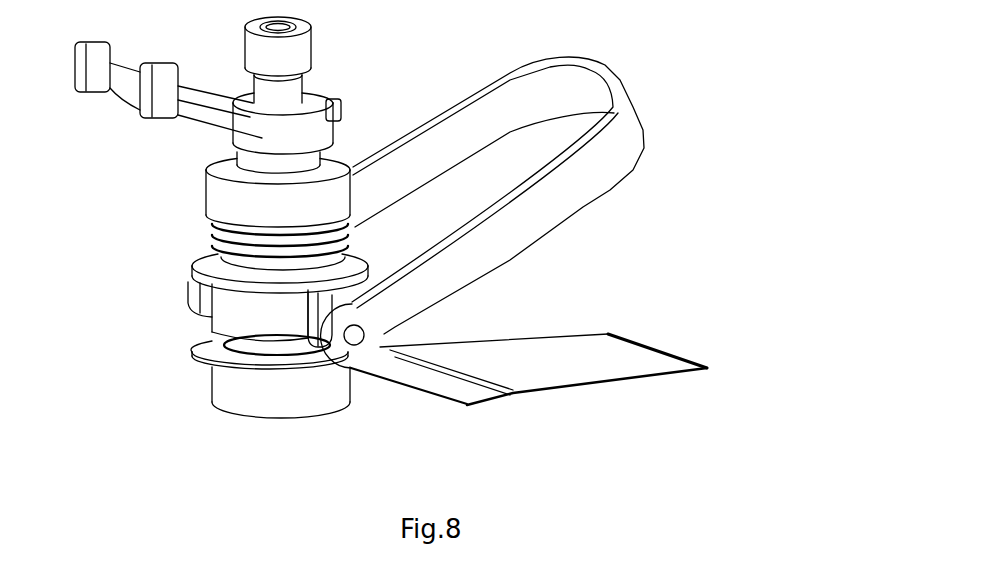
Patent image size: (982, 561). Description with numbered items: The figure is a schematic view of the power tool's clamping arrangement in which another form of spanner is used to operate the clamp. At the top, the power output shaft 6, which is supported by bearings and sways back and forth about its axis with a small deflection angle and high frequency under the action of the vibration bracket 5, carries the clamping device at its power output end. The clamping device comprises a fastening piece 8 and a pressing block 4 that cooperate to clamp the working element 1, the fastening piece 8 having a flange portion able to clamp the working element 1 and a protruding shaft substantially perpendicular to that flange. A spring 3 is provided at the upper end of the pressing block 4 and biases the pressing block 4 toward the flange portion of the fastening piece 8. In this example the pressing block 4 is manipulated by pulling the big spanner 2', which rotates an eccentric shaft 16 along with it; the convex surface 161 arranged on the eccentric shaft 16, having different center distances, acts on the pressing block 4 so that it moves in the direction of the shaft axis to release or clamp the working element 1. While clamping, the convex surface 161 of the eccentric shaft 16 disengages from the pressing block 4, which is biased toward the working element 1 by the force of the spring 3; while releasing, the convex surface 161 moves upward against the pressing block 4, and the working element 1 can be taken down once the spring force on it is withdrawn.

The working element 1 is at (480, 405).
The big spanner 2' is at (498, 172).
The spring 3 is at (222, 245).
The pressing block 4 is at (228, 313).
The vibration bracket 5 is at (197, 107).
The power output shaft 6 is at (262, 165).
The fastening piece 8 is at (278, 395).
The eccentric shaft 16 is at (364, 333).
The convex surface 161 is at (370, 291).